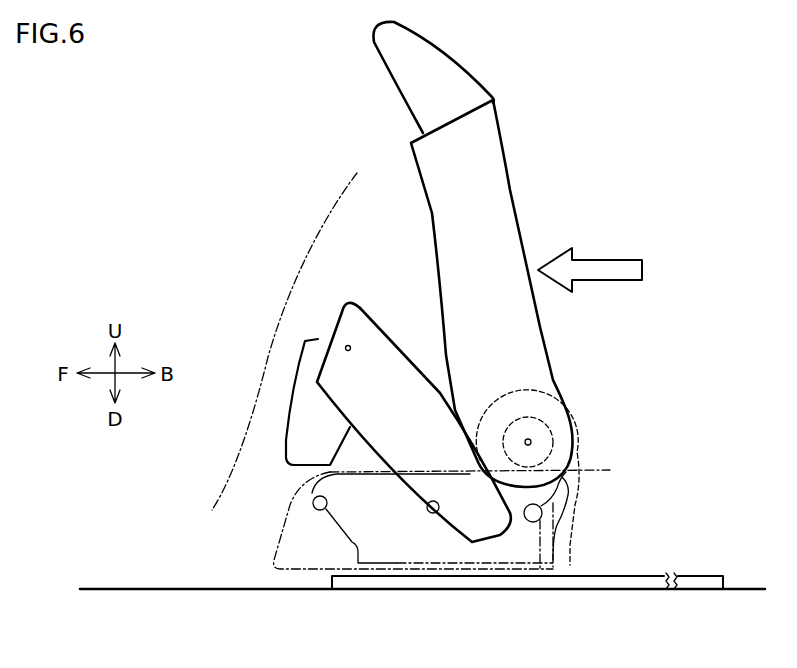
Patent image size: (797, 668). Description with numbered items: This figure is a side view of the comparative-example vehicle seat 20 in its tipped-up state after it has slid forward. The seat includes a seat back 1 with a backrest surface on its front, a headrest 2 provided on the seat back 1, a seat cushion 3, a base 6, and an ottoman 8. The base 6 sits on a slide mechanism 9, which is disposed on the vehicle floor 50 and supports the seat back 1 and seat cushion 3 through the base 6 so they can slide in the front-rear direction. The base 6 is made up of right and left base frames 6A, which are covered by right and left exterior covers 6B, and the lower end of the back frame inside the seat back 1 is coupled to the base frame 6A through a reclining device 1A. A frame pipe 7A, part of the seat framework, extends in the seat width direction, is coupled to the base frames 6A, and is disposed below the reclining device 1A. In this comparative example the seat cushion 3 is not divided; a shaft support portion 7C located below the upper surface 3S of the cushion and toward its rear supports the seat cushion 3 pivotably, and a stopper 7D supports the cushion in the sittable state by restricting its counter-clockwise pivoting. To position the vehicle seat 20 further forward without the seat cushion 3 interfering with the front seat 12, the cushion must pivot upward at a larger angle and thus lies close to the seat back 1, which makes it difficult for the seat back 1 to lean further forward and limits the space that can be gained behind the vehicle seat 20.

The seat back 1 is at (480, 151).
The reclining device 1A is at (610, 470).
The headrest 2 is at (433, 70).
The seat cushion 3 is at (490, 407).
The upper surface of seat cushion 3S is at (424, 372).
The base 6 is at (489, 480).
The base frame 6A is at (567, 525).
The exterior cover 6B is at (577, 497).
The frame pipe 7A is at (535, 522).
The shaft support portion 7C is at (433, 513).
The stopper 7D is at (321, 510).
The ottoman 8 is at (310, 367).
The slide mechanism 9 is at (617, 584).
The front seat 12 is at (315, 238).
The vehicle seat 20 is at (406, 230).
The vehicle floor 50 is at (100, 588).